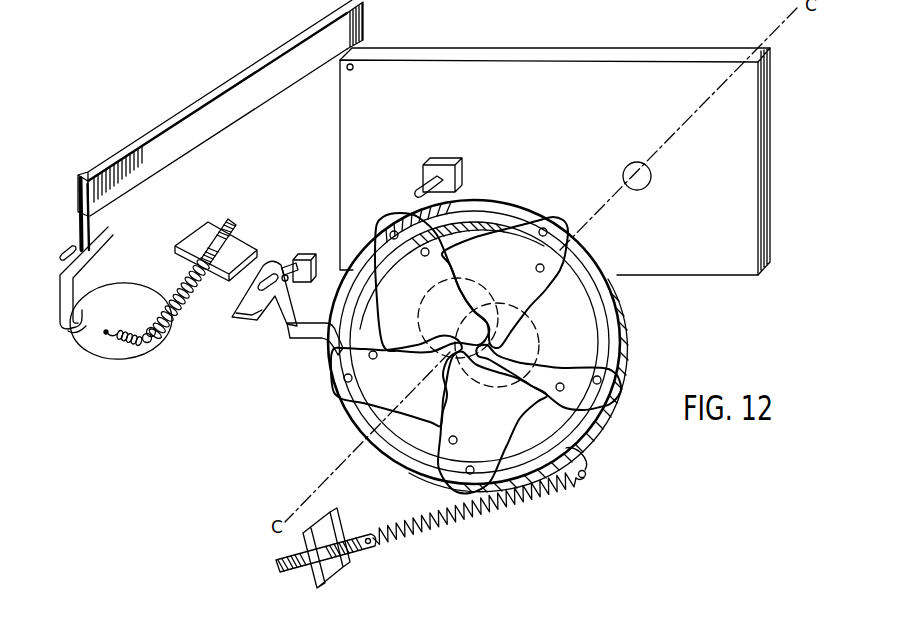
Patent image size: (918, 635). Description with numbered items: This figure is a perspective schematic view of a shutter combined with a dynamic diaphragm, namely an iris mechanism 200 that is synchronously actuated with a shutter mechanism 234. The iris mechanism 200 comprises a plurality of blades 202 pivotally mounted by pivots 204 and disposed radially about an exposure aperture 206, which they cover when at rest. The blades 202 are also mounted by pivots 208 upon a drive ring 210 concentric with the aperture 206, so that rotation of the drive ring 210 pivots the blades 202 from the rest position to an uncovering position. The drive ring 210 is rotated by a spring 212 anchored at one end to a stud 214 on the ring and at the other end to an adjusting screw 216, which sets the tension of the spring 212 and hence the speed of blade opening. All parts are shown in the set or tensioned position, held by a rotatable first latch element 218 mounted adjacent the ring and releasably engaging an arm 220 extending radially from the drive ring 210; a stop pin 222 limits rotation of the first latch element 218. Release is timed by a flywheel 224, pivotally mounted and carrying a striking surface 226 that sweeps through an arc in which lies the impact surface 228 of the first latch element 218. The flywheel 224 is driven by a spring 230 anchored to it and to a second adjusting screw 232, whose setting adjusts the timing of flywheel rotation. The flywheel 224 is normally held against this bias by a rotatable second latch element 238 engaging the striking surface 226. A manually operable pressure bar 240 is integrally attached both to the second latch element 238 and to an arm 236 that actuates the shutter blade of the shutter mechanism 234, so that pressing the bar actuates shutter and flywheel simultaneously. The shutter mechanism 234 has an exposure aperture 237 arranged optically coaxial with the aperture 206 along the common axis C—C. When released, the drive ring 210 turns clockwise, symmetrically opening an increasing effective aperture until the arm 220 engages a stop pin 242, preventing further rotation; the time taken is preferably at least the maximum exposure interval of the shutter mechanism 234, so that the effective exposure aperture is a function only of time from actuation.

The iris mechanism 200 is at (639, 321).
The blades 202 is at (503, 240).
The pivots 204 is at (337, 354).
The exposure aperture 206 is at (410, 372).
The pivots 208 is at (546, 228).
The drive ring 210 is at (617, 298).
The spring 212 is at (465, 513).
The stud 214 is at (590, 469).
The adjusting screw 216 is at (352, 553).
The first latch element 218 is at (270, 251).
The arm 220 is at (293, 333).
The stop pin 222 is at (303, 254).
The flywheel 224 is at (122, 298).
The striking surface 226 is at (80, 329).
The impact surface 228 is at (233, 318).
The spring 230 is at (173, 332).
The second adjusting screw 232 is at (178, 252).
The shutter mechanism 234 is at (531, 121).
The arm 236 is at (368, 52).
The exposure aperture 237 is at (648, 166).
The second latch element 238 is at (57, 268).
The pressure bar 240 is at (214, 106).
The stop pin 242 is at (416, 188).